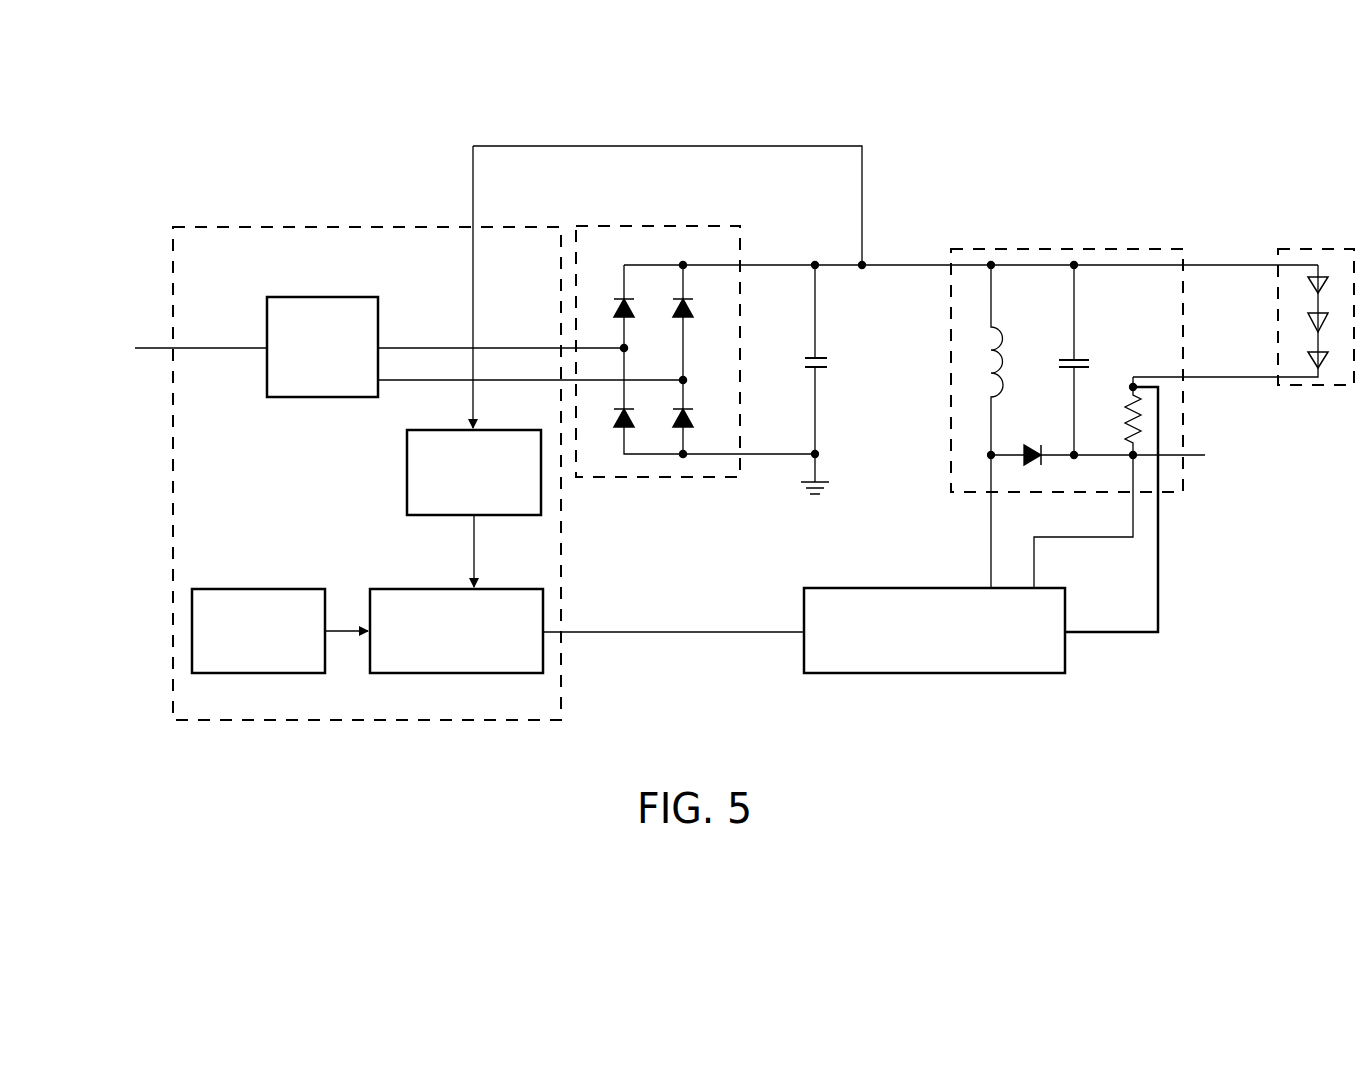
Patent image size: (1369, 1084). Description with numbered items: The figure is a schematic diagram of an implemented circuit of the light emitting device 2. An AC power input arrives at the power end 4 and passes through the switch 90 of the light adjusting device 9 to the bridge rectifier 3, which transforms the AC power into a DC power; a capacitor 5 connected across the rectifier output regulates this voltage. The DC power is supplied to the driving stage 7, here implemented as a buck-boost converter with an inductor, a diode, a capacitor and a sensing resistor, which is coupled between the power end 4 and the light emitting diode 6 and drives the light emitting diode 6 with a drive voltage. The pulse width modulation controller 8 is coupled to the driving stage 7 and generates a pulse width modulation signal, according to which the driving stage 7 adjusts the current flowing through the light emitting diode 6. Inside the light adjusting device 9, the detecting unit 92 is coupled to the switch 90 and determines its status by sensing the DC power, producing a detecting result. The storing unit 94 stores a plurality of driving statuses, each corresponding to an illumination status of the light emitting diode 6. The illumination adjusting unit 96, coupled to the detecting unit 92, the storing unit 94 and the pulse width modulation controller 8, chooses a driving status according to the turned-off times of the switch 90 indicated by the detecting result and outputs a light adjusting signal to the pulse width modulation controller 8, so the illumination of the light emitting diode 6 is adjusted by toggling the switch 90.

The light emitting device 2 is at (232, 126).
The bridge rectifier 3 is at (672, 226).
The power end 4 is at (153, 346).
The capacitor 5 is at (834, 364).
The light emitting diode 6 is at (1315, 249).
The driving stage 7 is at (1049, 249).
The pulse width modulation controller 8 is at (932, 588).
The light adjusting device 9 is at (370, 227).
The switch 90 is at (320, 297).
The detecting unit 92 is at (407, 475).
The storing unit 94 is at (255, 589).
The illumination adjusting unit 96 is at (395, 589).